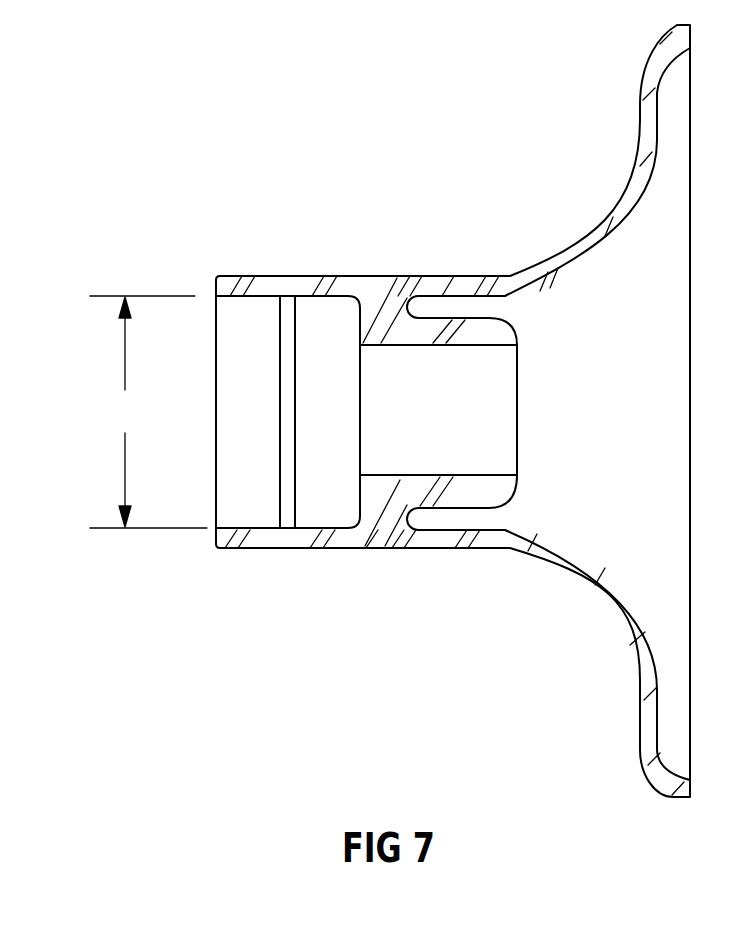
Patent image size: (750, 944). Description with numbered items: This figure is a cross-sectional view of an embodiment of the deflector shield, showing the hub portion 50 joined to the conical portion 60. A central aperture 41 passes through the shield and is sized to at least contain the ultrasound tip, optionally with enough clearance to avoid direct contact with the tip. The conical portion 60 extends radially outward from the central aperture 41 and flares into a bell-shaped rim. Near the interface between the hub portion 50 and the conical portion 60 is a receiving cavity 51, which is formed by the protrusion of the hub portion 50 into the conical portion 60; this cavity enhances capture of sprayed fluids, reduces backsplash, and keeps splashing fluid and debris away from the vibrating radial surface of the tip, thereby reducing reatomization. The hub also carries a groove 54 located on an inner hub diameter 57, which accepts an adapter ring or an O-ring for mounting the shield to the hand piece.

The central aperture 41 is at (408, 367).
The hub portion 50 is at (377, 525).
The receiving cavity 51 is at (443, 303).
The groove 54 is at (287, 332).
The inner hub diameter 57 is at (148, 412).
The conical portion 60 is at (580, 528).